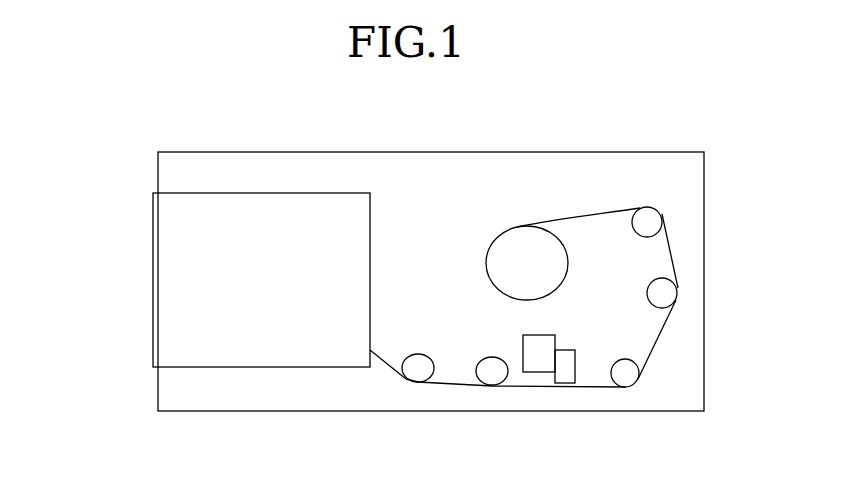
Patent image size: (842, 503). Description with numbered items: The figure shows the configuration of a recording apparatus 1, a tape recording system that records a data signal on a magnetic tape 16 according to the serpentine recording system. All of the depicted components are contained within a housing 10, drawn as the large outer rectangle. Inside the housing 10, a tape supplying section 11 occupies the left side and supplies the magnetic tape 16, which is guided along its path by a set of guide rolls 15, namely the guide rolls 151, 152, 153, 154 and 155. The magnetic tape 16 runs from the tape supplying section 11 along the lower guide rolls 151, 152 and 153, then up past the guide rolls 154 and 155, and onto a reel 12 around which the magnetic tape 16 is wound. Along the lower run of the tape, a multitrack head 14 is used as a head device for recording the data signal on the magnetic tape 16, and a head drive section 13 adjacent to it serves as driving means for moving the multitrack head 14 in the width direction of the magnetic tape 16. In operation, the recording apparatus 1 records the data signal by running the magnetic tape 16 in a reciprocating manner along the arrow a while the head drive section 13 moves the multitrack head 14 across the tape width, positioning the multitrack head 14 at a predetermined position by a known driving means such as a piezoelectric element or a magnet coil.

The recording apparatus 1 is at (95, 121).
The housing 10 is at (206, 152).
The tape supplying section 11 is at (332, 193).
The reel 12 is at (507, 243).
The head drive section 13 is at (543, 340).
The multitrack head 14 is at (567, 360).
The guide rolls 15 is at (542, 297).
The guide roll 151 is at (417, 373).
The guide roll 152 is at (492, 375).
The guide roll 153 is at (630, 374).
The guide roll 154 is at (667, 294).
The guide roll 155 is at (652, 221).
The magnetic tape 16 is at (381, 365).
The arrow a is at (512, 398).